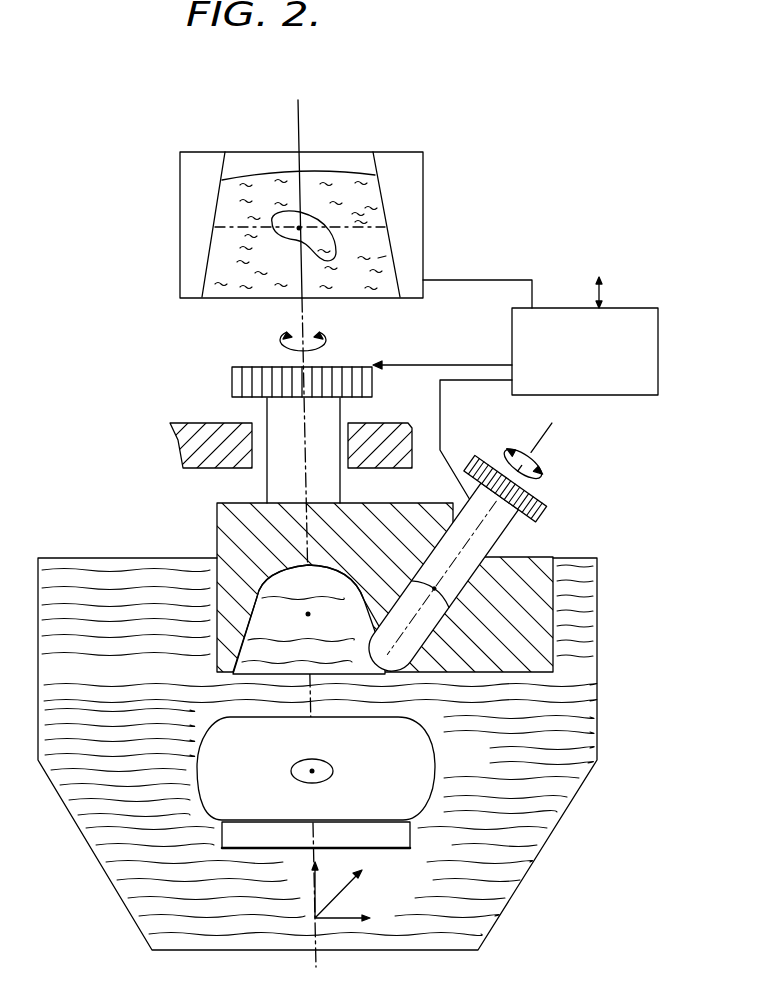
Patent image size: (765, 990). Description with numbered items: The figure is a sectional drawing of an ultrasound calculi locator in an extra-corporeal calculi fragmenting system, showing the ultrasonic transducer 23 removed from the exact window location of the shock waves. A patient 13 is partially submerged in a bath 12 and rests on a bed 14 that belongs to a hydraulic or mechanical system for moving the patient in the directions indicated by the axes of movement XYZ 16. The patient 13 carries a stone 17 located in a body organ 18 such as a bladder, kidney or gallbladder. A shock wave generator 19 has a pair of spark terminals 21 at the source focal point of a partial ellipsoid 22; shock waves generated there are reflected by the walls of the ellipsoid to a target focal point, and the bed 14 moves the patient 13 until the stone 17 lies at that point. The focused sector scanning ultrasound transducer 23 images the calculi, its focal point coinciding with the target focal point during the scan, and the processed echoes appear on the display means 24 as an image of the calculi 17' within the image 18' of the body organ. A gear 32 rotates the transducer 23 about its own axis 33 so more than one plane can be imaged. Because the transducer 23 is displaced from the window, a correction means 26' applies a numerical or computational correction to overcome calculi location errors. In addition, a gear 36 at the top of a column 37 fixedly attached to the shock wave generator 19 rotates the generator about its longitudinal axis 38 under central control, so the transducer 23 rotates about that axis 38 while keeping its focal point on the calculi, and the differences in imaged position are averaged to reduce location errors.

The bath 12 is at (597, 650).
The patient 13 is at (437, 767).
The bed 14 is at (408, 843).
The axes of movement XYZ 16 is at (367, 900).
The stone 17 is at (298, 752).
The body organ 18 is at (332, 762).
The shock wave generator 19 is at (217, 520).
The spark terminals 21 is at (308, 616).
The partial ellipsoid 22 is at (238, 641).
The ultrasound transducer 23 is at (486, 548).
The display means 24 is at (423, 243).
The correction means 26' is at (609, 325).
The gear 32 is at (540, 510).
The axis of the transducer 33 is at (532, 450).
The gear 36 is at (372, 382).
The column 37 is at (332, 492).
The axis of the shock wave generator 38 is at (297, 324).
The image of the calculi 17' is at (284, 252).
The image of the body organ 18' is at (327, 236).